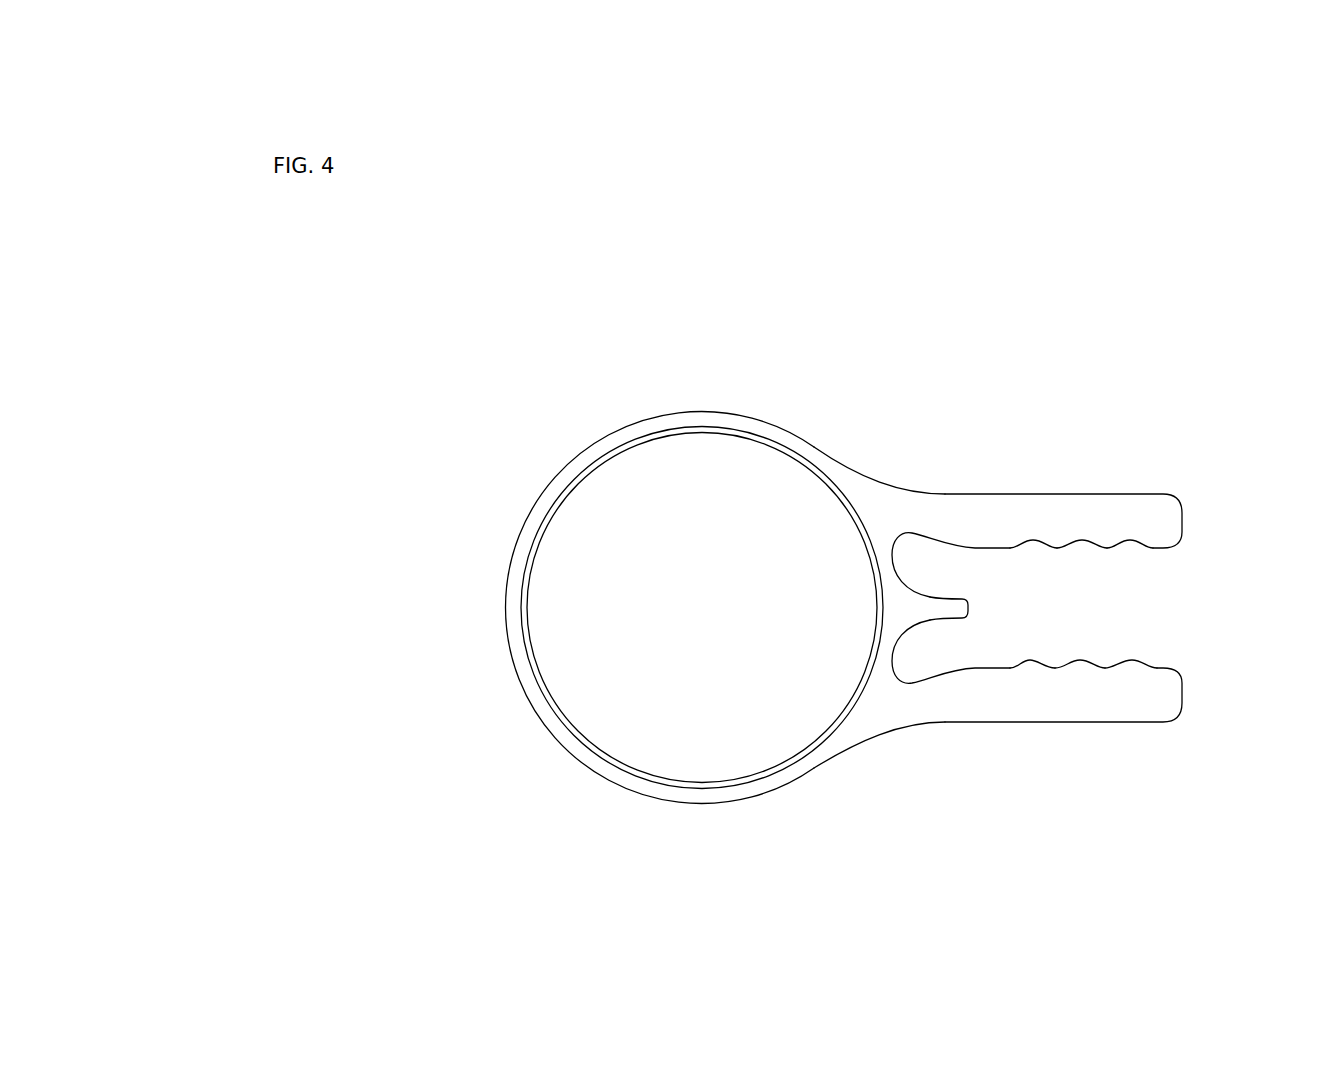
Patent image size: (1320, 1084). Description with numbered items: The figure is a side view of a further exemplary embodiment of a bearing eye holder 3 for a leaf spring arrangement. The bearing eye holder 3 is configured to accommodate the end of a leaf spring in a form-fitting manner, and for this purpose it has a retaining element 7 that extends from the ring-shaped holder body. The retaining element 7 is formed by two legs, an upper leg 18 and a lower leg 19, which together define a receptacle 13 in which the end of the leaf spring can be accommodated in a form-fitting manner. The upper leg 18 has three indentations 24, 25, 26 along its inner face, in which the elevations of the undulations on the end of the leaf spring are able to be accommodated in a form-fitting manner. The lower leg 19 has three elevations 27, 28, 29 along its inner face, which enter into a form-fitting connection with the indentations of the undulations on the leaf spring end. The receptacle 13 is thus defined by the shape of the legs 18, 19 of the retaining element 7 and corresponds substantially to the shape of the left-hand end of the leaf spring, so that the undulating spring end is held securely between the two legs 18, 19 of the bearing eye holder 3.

The bearing eye holder 3 is at (710, 355).
The retaining element 7 is at (1087, 430).
The receptacle 13 is at (975, 628).
The upper leg 18 is at (1158, 520).
The lower leg 19 is at (1158, 702).
The indentation 24 is at (1027, 556).
The indentation 25 is at (1076, 557).
The indentation 26 is at (1124, 559).
The elevation 27 is at (1038, 663).
The elevation 28 is at (1093, 665).
The elevation 29 is at (1145, 662).